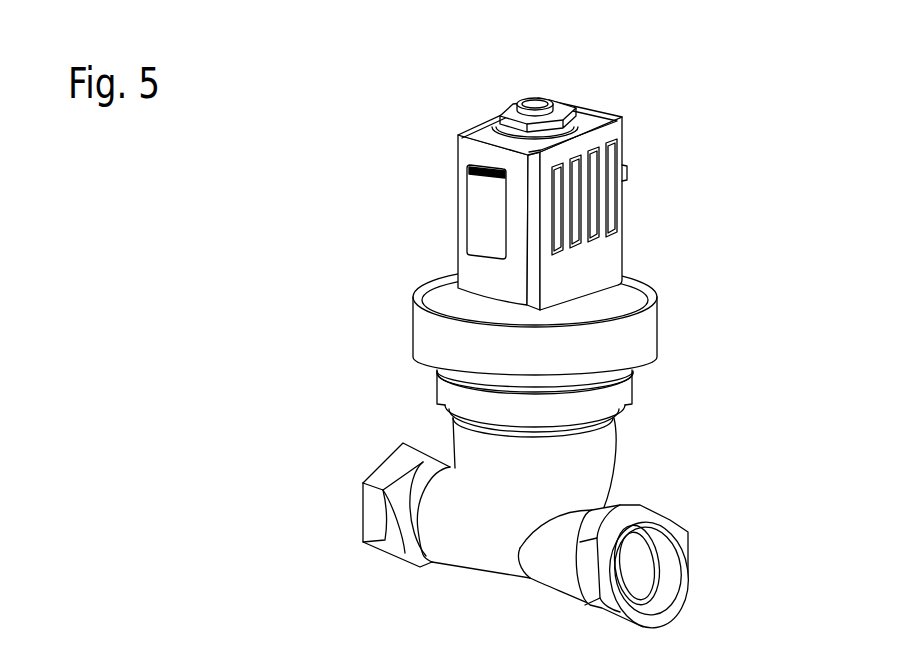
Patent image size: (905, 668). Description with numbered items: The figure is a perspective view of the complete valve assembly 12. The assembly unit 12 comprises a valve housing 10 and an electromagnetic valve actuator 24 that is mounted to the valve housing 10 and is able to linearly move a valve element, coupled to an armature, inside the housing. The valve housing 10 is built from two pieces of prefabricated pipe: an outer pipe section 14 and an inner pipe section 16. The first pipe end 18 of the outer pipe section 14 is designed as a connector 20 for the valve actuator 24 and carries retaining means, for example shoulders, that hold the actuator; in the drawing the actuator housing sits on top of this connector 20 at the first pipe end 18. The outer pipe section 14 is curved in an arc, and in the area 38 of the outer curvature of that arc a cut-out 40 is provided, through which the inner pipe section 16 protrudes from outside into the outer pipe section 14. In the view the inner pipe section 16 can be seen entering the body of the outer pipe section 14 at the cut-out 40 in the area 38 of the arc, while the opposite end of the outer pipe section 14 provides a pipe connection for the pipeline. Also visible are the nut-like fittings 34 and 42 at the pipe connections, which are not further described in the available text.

The valve housing 10 is at (678, 450).
The valve assembly 12 is at (735, 164).
The outer pipe section 14 is at (592, 448).
The inner pipe section 16 is at (550, 568).
The first pipe end 18 is at (437, 390).
The connector 20 is at (402, 378).
The valve actuator 24 is at (603, 256).
The inlet nut 34 is at (368, 510).
The area of the outer curvature of the arc 38 is at (592, 493).
The cut-out 40 is at (520, 550).
The outlet nut 42 is at (677, 535).